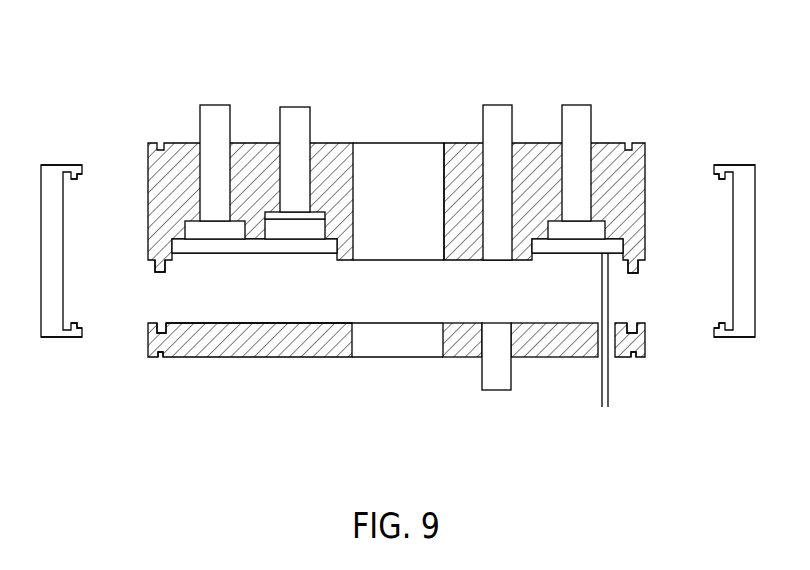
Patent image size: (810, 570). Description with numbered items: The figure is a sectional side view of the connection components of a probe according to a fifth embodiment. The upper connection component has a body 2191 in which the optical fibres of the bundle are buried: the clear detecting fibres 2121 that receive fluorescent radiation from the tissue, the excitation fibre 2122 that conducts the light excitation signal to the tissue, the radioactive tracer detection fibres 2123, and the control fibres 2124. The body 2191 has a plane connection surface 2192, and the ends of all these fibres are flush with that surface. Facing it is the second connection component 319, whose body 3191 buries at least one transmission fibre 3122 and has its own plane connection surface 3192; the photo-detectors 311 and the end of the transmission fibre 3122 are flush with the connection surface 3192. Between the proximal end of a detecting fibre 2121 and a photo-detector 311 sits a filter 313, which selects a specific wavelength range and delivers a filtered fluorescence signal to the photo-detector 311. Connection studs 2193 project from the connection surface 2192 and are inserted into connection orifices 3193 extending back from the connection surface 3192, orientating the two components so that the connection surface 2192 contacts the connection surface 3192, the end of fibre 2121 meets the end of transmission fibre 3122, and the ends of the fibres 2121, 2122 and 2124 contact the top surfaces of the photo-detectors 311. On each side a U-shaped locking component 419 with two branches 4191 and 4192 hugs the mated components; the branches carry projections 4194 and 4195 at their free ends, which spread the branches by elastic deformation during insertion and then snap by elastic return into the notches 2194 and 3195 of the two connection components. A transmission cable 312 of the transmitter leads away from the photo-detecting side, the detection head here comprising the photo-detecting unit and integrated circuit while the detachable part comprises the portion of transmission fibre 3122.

The detecting fibre 2121 is at (297, 115).
The excitation fibre 2122 is at (492, 120).
The radioactive tracer detection fibre 2123 is at (213, 120).
The control fibre 2124 is at (578, 115).
The body 2191 is at (460, 150).
The connection surface 2192 is at (465, 256).
The connection stud 2193 is at (153, 263).
The notch 2194 is at (161, 146).
The photo-detector 311 is at (208, 232).
The transmission cable 312 is at (605, 410).
The filter 313 is at (310, 219).
The connection component 319 is at (396, 372).
The transmission fibre 3122 is at (492, 378).
The body 3191 is at (263, 353).
The connection surface 3192 is at (250, 323).
The connection orifice 3193 is at (161, 323).
The notch 3195 is at (160, 358).
The locking component 419 is at (47, 166).
The branch 4191 is at (78, 168).
The branch 4192 is at (72, 338).
The projection 4194 is at (78, 177).
The projection 4195 is at (83, 328).